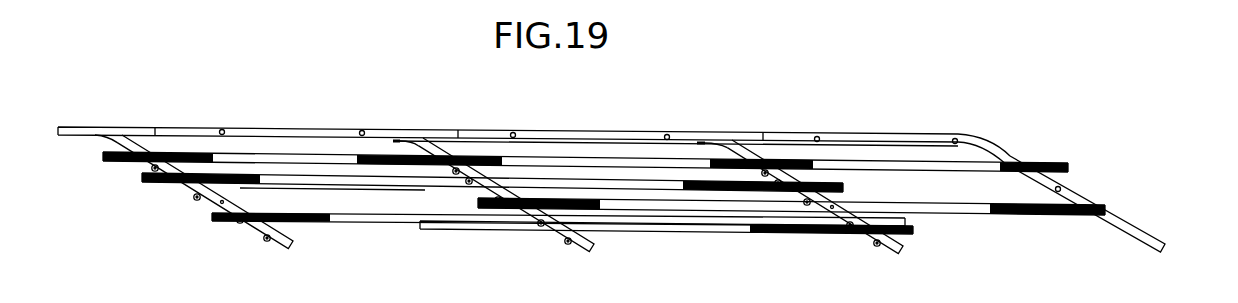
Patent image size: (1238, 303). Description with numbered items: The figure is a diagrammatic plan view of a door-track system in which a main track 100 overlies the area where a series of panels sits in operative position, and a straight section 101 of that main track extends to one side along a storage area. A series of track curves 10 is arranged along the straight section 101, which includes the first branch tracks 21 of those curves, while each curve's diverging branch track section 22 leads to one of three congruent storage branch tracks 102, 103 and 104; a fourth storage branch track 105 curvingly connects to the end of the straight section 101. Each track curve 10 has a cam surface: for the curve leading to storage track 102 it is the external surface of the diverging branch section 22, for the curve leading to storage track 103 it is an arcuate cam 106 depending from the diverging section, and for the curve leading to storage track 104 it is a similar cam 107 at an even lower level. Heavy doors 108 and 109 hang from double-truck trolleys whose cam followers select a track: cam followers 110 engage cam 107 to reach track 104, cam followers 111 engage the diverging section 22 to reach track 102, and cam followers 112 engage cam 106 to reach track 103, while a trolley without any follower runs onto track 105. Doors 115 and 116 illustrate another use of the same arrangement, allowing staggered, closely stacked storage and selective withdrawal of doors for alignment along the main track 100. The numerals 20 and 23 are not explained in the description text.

The track curve 10 is at (418, 128).
The end stay bar 20 is at (190, 110).
The first branch track 21 is at (143, 127).
The diverging branch track section 22 is at (125, 134).
The pivot rivet 23 is at (203, 215).
The main track 100 is at (80, 127).
The straight section 101 is at (583, 131).
The storage branch track 102 is at (295, 245).
The storage branch track 103 is at (600, 248).
The storage branch track 104 is at (910, 250).
The fourth storage branch track 105 is at (1158, 248).
The arcuate cam 106 is at (393, 141).
The cam 107 is at (697, 143).
The door 108 is at (445, 230).
The door 109 is at (1000, 216).
The cam follower 110 is at (773, 170).
The cam follower 111 is at (157, 172).
The cam follower 112 is at (457, 173).
The door 115 is at (272, 152).
The door 116 is at (920, 163).